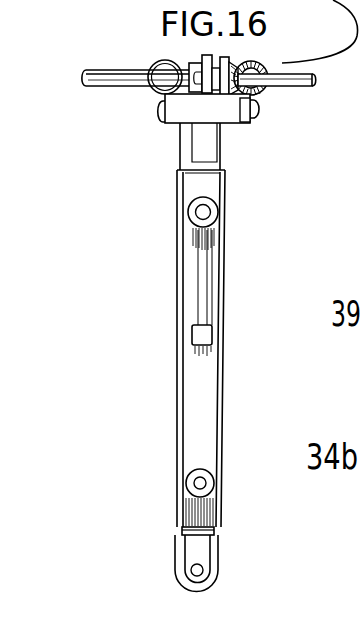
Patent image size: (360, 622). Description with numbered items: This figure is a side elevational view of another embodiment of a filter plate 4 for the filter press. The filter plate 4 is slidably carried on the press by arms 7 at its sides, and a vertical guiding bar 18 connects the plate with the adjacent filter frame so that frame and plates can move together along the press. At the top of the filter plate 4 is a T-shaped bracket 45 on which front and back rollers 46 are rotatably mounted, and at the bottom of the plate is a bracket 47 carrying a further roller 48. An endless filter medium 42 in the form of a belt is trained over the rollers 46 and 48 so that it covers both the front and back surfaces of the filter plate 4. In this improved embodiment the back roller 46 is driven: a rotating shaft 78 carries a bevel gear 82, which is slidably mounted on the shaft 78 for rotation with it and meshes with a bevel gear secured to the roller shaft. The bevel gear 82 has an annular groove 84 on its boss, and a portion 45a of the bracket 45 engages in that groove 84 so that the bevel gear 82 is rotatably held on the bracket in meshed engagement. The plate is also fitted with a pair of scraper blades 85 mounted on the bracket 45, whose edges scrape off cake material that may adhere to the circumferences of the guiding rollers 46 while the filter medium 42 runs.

The filter plate 4 is at (203, 408).
The arm 7 is at (192, 335).
The guiding bar 18 is at (55, 60).
The filter medium 42 is at (286, 90).
The T-shaped bracket 45 is at (192, 132).
The portion of bracket 45a is at (206, 55).
The roller 46 is at (157, 60).
The bracket 47 is at (190, 542).
The roller 48 is at (182, 578).
The rotating shaft 78 is at (123, 91).
The bevel gear 82 is at (243, 126).
The annular groove 84 is at (200, 125).
The scraper blade 85 is at (157, 110).